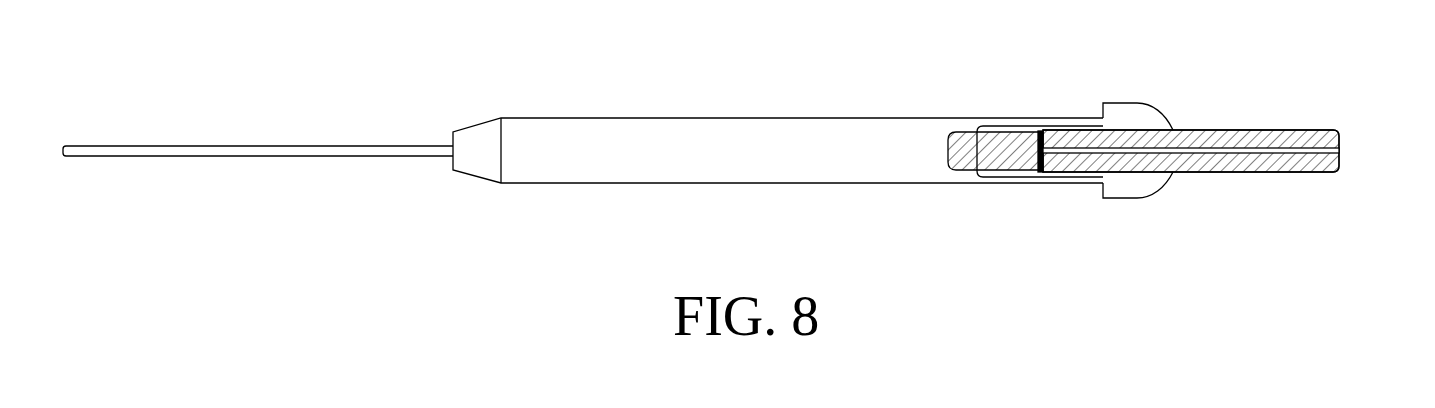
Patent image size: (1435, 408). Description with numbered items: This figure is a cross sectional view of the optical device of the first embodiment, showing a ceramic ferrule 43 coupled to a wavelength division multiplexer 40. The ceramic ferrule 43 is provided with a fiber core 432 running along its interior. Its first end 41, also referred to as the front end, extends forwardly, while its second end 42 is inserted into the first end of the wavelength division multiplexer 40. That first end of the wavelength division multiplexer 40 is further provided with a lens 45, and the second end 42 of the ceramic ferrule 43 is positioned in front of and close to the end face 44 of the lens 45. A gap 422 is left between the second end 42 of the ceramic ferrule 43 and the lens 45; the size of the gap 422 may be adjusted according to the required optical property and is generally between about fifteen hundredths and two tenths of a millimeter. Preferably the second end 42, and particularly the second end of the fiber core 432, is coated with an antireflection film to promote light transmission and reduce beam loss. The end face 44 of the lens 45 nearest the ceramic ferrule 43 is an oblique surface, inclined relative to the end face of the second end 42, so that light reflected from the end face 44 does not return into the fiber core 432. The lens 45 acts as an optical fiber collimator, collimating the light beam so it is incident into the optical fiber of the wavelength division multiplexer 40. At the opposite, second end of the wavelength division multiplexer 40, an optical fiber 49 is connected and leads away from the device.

The wavelength division multiplexer 40 is at (783, 49).
The first end of the ceramic ferrule 41 is at (1317, 171).
The second end of the ceramic ferrule 42 is at (1053, 130).
The ceramic ferrule 43 is at (1257, 124).
The end face of the lens 44 is at (1043, 172).
The lens 45 is at (953, 138).
The optical fiber 49 is at (321, 148).
The gap 422 is at (1031, 131).
The fiber core 432 is at (1178, 151).